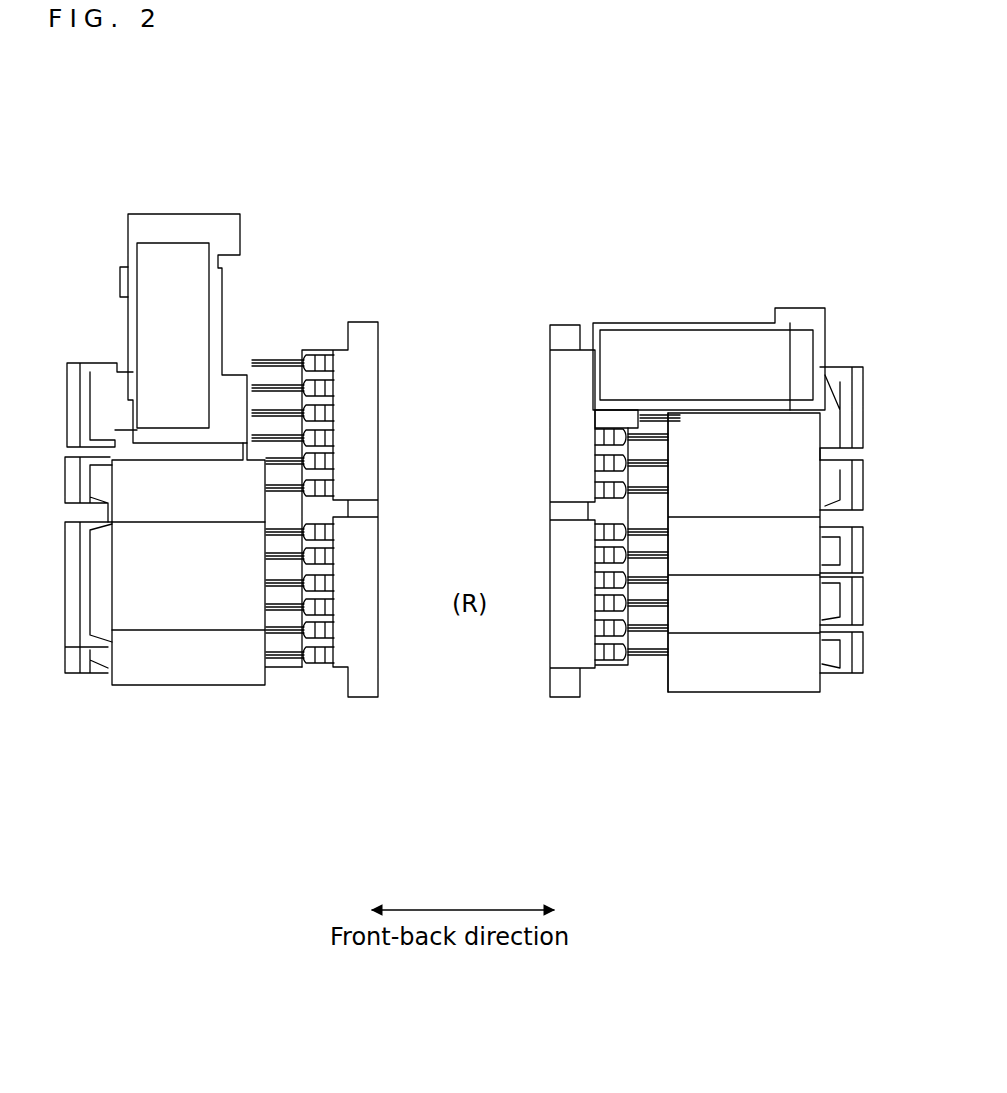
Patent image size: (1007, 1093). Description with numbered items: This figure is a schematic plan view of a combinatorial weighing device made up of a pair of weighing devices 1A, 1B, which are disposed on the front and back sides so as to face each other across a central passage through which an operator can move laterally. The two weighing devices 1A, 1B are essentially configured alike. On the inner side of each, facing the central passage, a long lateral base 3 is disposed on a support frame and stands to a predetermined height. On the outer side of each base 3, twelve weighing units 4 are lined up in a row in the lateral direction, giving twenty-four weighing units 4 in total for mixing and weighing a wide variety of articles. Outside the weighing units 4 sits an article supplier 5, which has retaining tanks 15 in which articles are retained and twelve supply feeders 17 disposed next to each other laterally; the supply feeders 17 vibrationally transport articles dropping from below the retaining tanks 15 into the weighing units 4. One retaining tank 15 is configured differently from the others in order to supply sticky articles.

The weighing device 1A is at (700, 726).
The weighing device 1B is at (218, 722).
The base 3 is at (380, 457).
The weighing unit 4 is at (318, 356).
The article supplier 5 is at (278, 300).
The retaining tank 15 is at (128, 342).
The supply feeder 17 is at (267, 386).